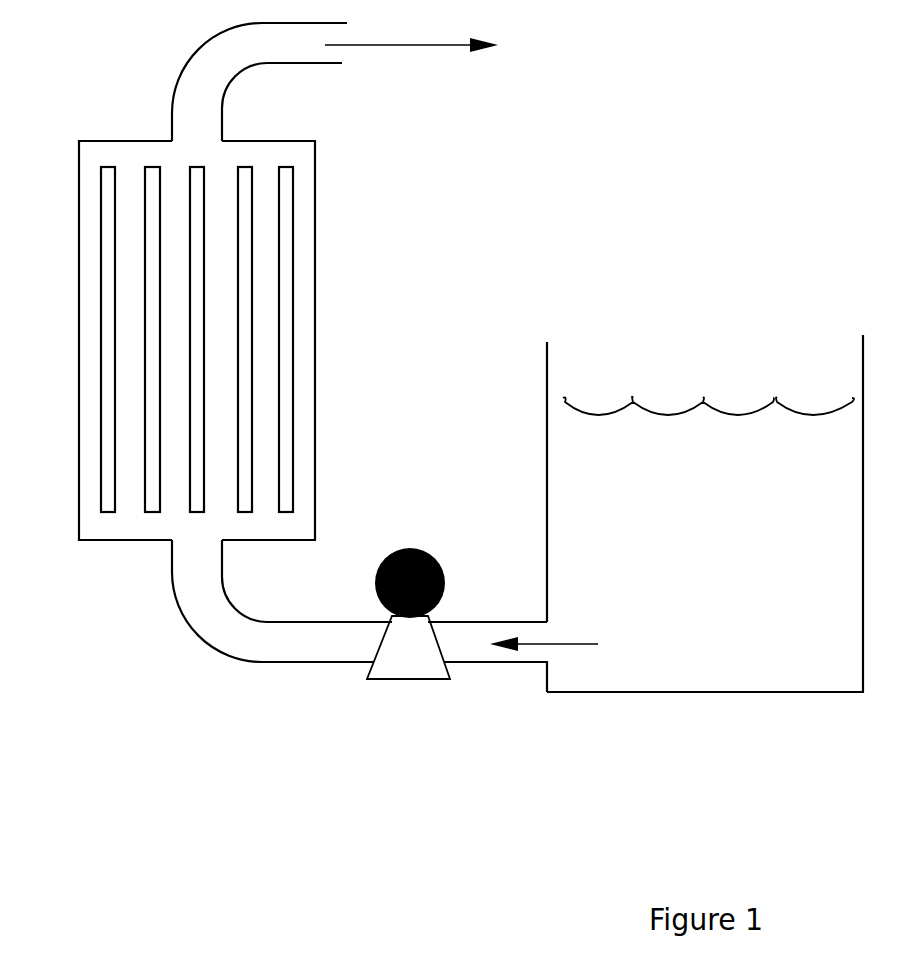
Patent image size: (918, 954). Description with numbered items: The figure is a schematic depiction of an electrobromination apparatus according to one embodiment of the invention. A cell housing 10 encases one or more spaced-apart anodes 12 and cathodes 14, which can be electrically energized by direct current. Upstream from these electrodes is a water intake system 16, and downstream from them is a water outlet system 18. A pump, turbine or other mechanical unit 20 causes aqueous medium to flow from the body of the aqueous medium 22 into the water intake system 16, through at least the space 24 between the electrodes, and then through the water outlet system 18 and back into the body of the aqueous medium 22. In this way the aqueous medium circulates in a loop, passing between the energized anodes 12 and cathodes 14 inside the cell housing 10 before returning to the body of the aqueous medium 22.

The cell housing 10 is at (315, 320).
The anodes 12 is at (106, 312).
The cathodes 14 is at (150, 392).
The water intake system 16 is at (265, 682).
The water outlet system 18 is at (193, 46).
The pump, turbine or other mechanical unit 20 is at (388, 693).
The body of the aqueous medium 22 is at (685, 561).
The space between the electrodes 24 is at (133, 186).